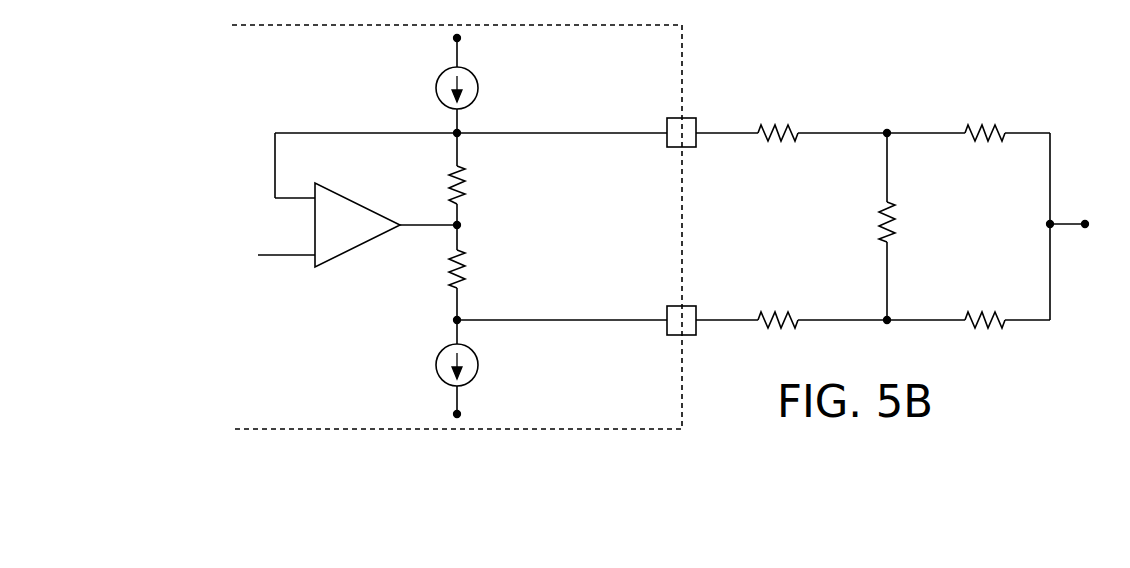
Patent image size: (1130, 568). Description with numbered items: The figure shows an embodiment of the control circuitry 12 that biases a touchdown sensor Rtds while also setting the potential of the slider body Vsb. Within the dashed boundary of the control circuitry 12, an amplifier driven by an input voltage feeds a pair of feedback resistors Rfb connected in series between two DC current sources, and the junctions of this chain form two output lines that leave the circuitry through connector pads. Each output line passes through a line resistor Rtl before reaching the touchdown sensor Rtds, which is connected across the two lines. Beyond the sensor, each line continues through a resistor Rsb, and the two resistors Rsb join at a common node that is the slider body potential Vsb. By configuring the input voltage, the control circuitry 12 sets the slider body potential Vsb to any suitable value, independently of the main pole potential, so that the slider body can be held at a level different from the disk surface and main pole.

The control circuitry 12 is at (692, 47).
The feedback resistor Rfb is at (474, 228).
The transmission line resistance Rtl is at (791, 217).
The slider body resistor Rsb is at (967, 216).
The touchdown sensor Rtds is at (865, 226).
The slider body potential Vsb is at (1076, 214).